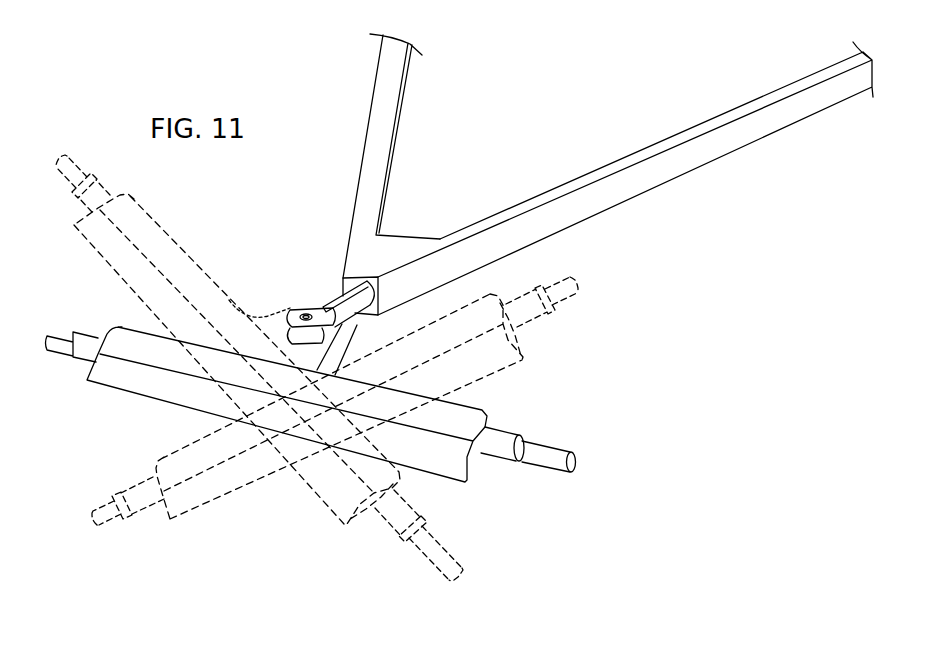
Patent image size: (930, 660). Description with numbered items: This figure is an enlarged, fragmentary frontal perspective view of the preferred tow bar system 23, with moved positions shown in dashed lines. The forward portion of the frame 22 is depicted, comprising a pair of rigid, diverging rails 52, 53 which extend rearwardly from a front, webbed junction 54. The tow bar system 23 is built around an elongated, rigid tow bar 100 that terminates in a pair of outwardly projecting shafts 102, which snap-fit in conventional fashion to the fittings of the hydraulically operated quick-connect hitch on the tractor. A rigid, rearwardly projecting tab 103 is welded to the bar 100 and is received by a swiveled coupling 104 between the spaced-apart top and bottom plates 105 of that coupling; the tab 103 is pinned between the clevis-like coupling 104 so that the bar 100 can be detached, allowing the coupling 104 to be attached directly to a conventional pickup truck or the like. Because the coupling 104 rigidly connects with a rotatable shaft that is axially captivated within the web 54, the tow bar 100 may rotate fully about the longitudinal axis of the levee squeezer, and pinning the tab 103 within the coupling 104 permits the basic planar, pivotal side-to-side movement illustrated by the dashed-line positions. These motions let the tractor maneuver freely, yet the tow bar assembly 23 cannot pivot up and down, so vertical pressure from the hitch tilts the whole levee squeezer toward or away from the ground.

The frame 22 is at (606, 174).
The tow bar system 23 is at (276, 302).
The rail 52 is at (625, 178).
The rail 53 is at (385, 108).
The webbed junction 54 is at (374, 280).
The tow bar 100 is at (232, 519).
The shaft 102 is at (66, 333).
The tab 103 is at (296, 352).
The swiveled coupling 104 is at (336, 279).
The plate 105 is at (342, 317).